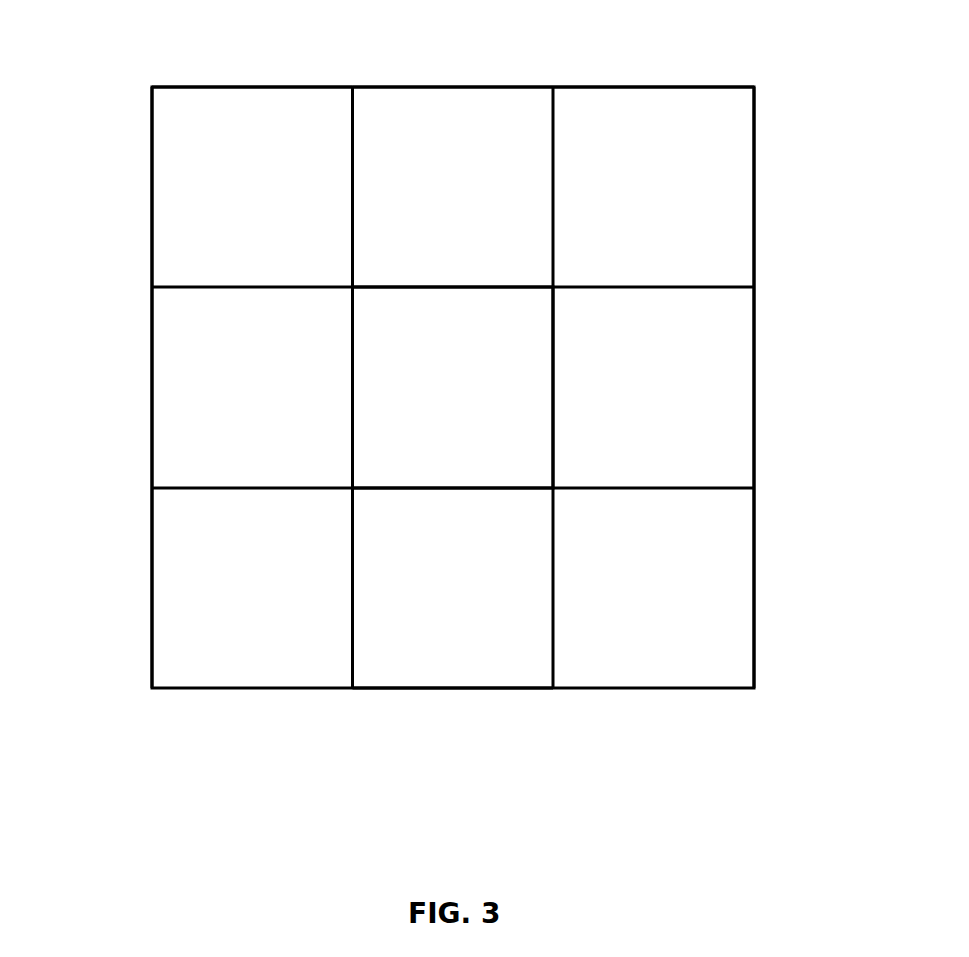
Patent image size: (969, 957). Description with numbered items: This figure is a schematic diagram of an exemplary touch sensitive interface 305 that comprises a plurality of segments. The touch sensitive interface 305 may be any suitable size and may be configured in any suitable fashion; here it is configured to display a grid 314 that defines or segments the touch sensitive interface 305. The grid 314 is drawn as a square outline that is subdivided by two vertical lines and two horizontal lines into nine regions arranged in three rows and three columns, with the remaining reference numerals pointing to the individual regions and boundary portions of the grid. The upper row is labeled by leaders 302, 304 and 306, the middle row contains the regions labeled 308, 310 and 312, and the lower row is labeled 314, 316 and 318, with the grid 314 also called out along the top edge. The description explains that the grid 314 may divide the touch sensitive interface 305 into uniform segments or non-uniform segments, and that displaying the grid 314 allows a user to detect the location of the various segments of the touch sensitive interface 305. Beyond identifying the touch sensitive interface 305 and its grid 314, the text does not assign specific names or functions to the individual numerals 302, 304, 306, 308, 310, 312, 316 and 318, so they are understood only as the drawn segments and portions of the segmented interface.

The left edge of grid 302 is at (197, 223).
The top center segment 304 is at (442, 147).
The touch sensitive interface 305 is at (217, 86).
The right upper edge 306 is at (703, 206).
The left middle edge 308 is at (197, 449).
The center cell 310 is at (452, 388).
The right middle edge 312 is at (703, 438).
The grid 314 is at (630, 86).
The bottom center segment 316 is at (462, 647).
The right lower edge 318 is at (695, 622).